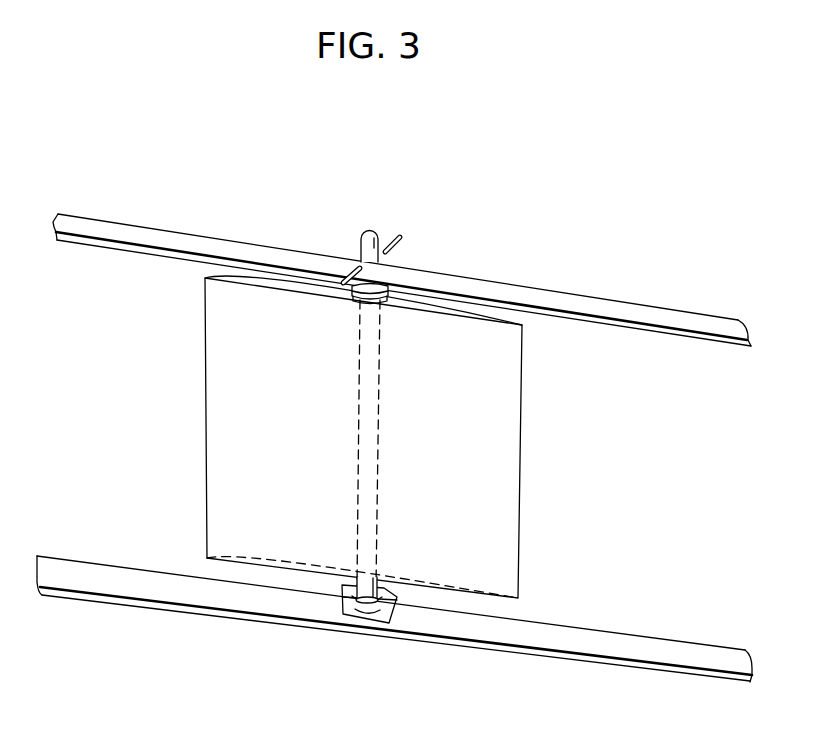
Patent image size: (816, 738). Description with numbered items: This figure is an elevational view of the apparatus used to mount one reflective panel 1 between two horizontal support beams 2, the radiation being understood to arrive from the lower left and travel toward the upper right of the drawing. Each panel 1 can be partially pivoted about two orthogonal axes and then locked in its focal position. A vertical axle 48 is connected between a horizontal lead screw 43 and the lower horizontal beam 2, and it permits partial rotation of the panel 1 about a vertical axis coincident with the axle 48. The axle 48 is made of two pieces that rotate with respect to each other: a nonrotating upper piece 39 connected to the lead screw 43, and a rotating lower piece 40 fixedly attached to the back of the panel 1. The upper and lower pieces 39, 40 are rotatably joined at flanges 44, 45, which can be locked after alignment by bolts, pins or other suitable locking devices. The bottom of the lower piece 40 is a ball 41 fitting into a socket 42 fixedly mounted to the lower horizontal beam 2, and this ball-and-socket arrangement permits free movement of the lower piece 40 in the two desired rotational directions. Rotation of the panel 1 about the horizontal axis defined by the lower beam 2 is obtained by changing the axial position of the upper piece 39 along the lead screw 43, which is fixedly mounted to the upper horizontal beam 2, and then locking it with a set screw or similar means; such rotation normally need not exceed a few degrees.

The reflective panel 1 is at (509, 407).
The horizontal support beam 2 is at (583, 302).
The upper piece 39 is at (378, 227).
The lower piece 40 is at (377, 436).
The ball 41 is at (355, 579).
The socket 42 is at (385, 620).
The lead screw 43 is at (402, 236).
The flange 44 is at (375, 283).
The flange 45 is at (377, 303).
The vertical axle 48 is at (358, 228).